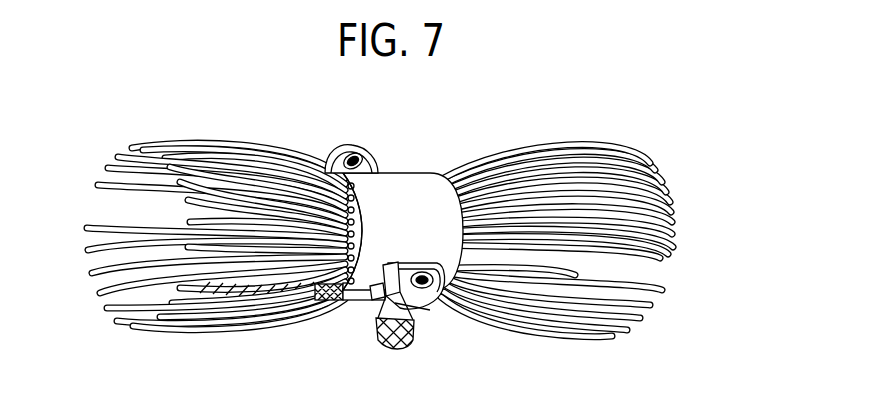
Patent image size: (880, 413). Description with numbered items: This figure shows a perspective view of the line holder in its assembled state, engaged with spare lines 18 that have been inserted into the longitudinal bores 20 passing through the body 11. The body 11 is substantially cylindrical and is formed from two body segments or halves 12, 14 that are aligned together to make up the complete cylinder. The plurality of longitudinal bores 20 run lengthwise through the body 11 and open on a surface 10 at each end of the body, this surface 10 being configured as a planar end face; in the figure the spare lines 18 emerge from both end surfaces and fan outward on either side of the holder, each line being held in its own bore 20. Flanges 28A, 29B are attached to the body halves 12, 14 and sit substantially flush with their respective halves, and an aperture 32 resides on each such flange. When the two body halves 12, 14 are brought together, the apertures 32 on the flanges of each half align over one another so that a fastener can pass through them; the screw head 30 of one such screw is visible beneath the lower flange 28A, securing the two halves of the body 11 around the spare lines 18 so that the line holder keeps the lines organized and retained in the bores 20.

The surface 10 is at (323, 297).
The body 11 is at (414, 232).
The body half 12 is at (360, 293).
The body half 14 is at (419, 182).
The spare lines 18 is at (653, 166).
The longitudinal bores 20 is at (333, 300).
The flange 28A is at (421, 323).
The flange 29B is at (351, 150).
The screw head 30 is at (387, 340).
The aperture 32 is at (362, 153).